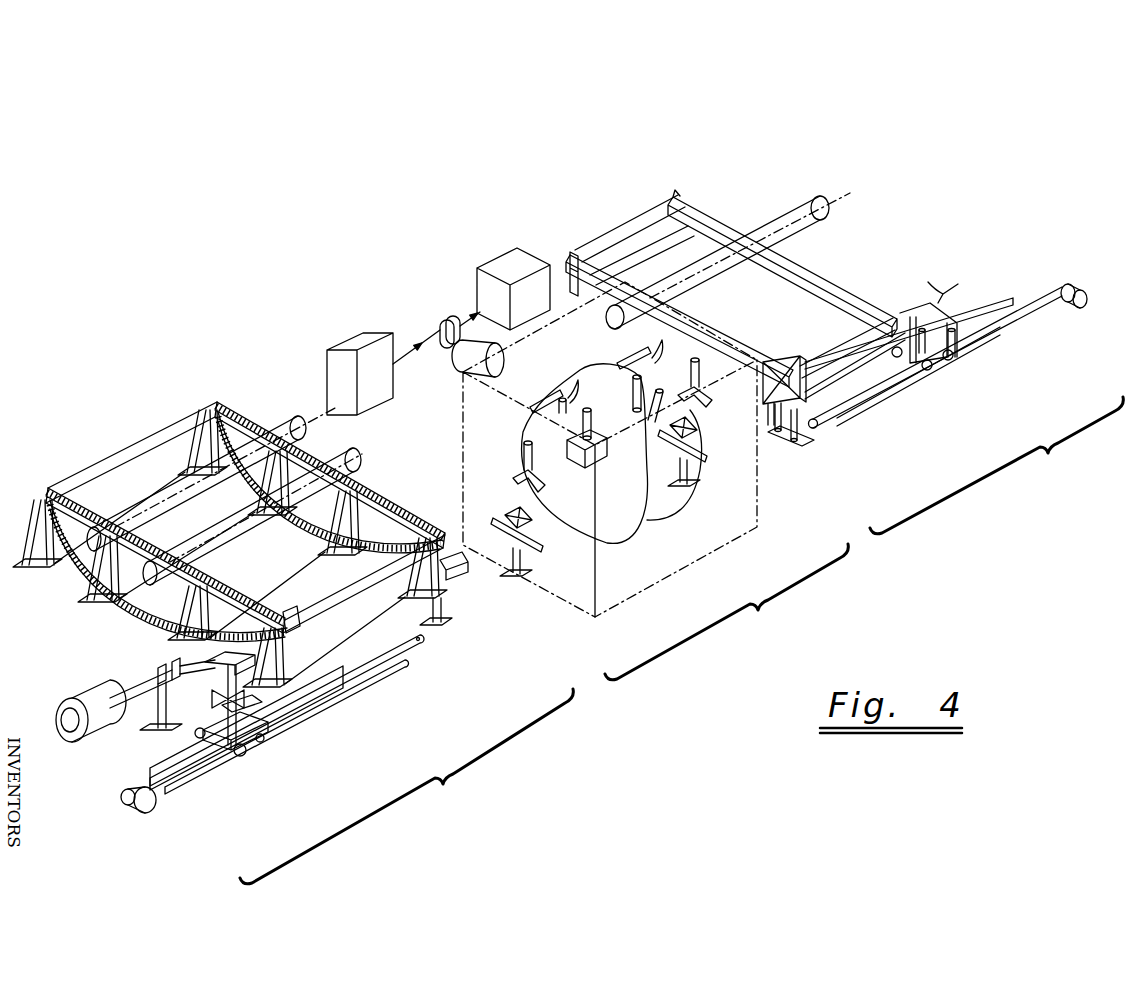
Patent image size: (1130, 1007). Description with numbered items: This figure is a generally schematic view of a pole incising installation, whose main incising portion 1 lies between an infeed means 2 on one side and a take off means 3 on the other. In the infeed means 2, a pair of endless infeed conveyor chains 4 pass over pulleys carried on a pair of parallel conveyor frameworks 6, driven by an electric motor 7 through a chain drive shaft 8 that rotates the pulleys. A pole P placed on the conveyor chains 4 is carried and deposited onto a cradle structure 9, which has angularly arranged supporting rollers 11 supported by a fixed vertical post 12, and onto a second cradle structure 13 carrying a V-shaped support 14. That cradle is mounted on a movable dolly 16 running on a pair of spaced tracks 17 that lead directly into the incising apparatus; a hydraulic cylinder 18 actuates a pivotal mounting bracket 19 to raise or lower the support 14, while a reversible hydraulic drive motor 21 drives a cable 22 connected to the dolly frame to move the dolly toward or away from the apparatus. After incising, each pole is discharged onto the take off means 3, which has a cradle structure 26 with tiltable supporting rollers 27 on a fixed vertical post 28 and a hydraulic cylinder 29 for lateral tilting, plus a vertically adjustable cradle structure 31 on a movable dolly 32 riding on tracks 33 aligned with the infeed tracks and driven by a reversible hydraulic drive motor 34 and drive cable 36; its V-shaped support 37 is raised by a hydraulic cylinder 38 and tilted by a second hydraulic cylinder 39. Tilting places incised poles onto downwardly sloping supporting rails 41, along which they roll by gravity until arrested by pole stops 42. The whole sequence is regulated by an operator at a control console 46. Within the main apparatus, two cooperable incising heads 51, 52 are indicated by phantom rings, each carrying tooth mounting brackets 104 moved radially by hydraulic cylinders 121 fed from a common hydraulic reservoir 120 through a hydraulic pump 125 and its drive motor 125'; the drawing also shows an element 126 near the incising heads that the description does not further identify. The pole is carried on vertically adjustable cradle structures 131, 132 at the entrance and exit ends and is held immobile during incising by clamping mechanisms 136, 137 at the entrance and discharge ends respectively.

The main incising portion 1 is at (760, 613).
The infeed means 2 is at (445, 782).
The take off means 3 is at (1052, 452).
The infeed conveyor chains 4 is at (92, 507).
The conveyor frameworks 6 is at (325, 530).
The electric motor 7 is at (87, 697).
The chain drive shaft 8 is at (290, 608).
The cradle structure 9 is at (458, 594).
The supporting rollers 11 is at (452, 566).
The fixed vertical post 12 is at (450, 608).
The second cradle structure 13 is at (246, 739).
The V-shaped support 14 is at (213, 662).
The movable dolly 16 is at (240, 705).
The tracks 17 is at (343, 667).
The hydraulic cylinder 18 is at (213, 733).
The pivotal mounting bracket 19 is at (285, 715).
The reversible hydraulic drive motor 21 is at (143, 810).
The cable 22 is at (405, 633).
The cradle structure 26 is at (783, 442).
The supporting rollers 27 is at (772, 370).
The fixed vertical post 28 is at (778, 418).
The hydraulic cylinder 29 is at (807, 442).
The vertically adjustable cradle structure 31 is at (957, 364).
The movable dolly 32 is at (930, 365).
The tracks 33 is at (995, 328).
The reversible hydraulic drive motor 34 is at (1075, 284).
The drive cable 36 is at (1037, 290).
The V-shaped support 37 is at (942, 292).
The hydraulic cylinder 38 is at (915, 335).
The second hydraulic cylinder 39 is at (965, 350).
The supporting rails 41 is at (727, 338).
The pole stops 42 is at (643, 222).
The control console 46 is at (350, 340).
The incising head 51 is at (630, 550).
The incising head 52 is at (686, 528).
The mounting bracket 104 is at (572, 442).
The hydraulic reservoir 120 is at (505, 256).
The hydraulic cylinders 121 is at (636, 410).
The hydraulic pump 125 is at (441, 309).
The drive motor 125' is at (455, 367).
The sealing rods 126 is at (548, 392).
The cradle structure 131 is at (545, 551).
The cradle structure 132 is at (714, 459).
The clamping mechanism 136 is at (519, 461).
The clamping mechanism 137 is at (705, 380).
The pole P is at (362, 452).